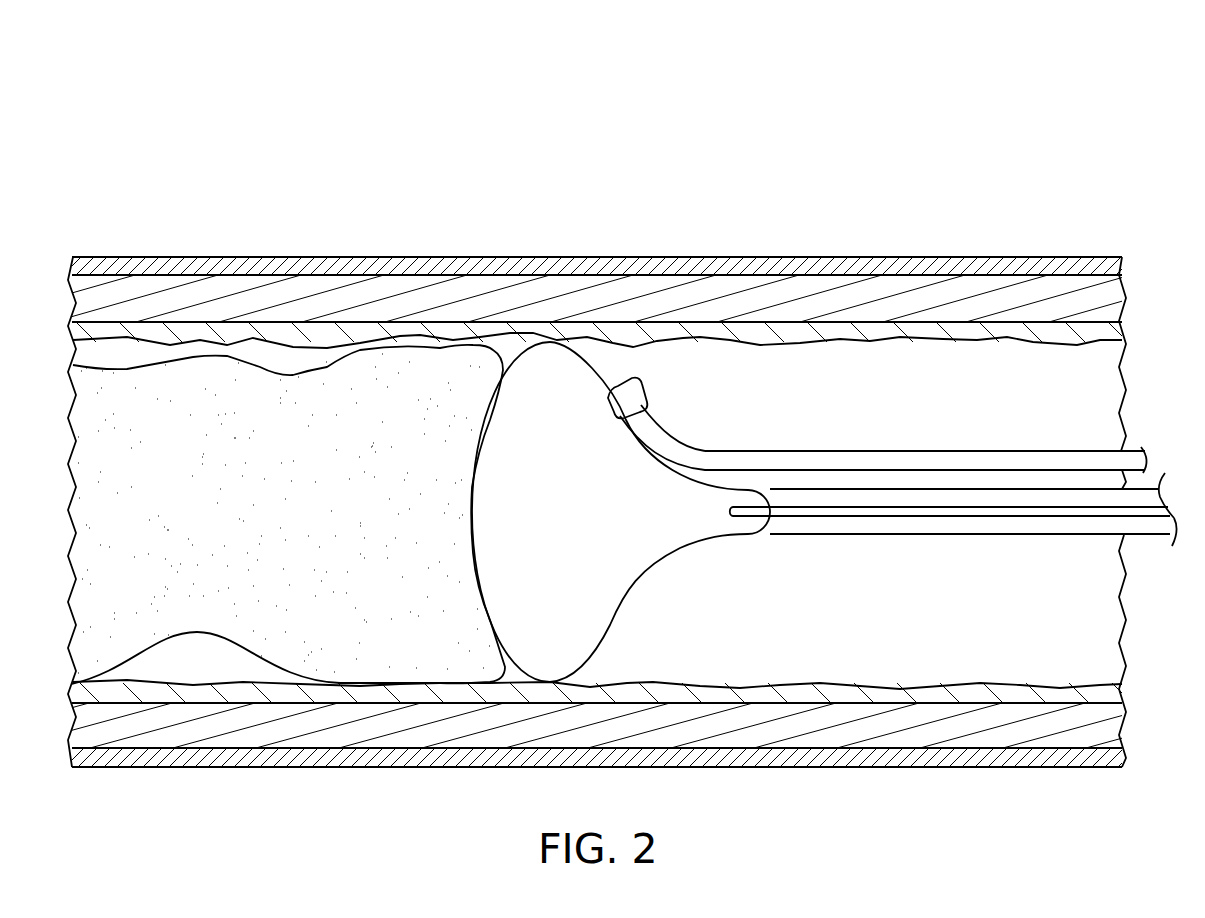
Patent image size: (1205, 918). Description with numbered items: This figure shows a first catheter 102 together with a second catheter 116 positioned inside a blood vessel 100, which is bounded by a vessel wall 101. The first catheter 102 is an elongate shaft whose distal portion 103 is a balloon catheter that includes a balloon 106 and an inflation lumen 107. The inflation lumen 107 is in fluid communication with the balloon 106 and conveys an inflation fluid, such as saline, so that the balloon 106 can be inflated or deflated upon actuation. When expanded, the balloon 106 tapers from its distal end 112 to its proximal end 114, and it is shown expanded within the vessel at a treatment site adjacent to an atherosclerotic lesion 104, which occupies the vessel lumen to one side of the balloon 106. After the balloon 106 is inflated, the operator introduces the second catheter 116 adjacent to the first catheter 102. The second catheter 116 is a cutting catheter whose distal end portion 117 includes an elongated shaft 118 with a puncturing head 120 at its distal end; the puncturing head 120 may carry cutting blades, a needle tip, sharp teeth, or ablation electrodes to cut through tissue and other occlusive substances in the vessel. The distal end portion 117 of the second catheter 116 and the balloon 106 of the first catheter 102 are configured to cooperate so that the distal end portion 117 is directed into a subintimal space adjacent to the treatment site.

The blood vessel 100 is at (1060, 116).
The vessel wall 101 is at (718, 246).
The first catheter 102 is at (1087, 561).
The distal portion 103 is at (1003, 536).
The atherosclerotic lesion 104 is at (390, 344).
The balloon 106 is at (624, 560).
The inflation lumen 107 is at (880, 518).
The distal end 112 is at (473, 485).
The proximal end 114 is at (768, 505).
The second catheter 116 is at (1074, 423).
The distal end portion 117 is at (962, 450).
The elongated shaft 118 is at (857, 455).
The puncturing head 120 is at (637, 390).